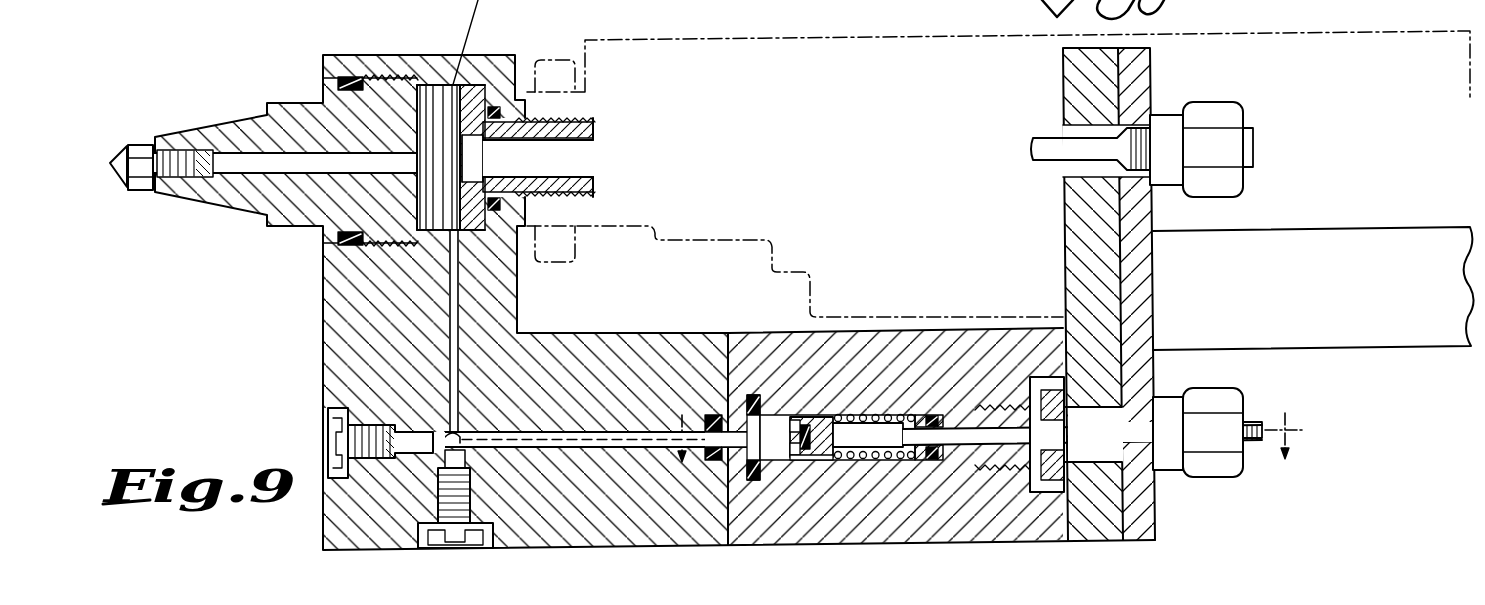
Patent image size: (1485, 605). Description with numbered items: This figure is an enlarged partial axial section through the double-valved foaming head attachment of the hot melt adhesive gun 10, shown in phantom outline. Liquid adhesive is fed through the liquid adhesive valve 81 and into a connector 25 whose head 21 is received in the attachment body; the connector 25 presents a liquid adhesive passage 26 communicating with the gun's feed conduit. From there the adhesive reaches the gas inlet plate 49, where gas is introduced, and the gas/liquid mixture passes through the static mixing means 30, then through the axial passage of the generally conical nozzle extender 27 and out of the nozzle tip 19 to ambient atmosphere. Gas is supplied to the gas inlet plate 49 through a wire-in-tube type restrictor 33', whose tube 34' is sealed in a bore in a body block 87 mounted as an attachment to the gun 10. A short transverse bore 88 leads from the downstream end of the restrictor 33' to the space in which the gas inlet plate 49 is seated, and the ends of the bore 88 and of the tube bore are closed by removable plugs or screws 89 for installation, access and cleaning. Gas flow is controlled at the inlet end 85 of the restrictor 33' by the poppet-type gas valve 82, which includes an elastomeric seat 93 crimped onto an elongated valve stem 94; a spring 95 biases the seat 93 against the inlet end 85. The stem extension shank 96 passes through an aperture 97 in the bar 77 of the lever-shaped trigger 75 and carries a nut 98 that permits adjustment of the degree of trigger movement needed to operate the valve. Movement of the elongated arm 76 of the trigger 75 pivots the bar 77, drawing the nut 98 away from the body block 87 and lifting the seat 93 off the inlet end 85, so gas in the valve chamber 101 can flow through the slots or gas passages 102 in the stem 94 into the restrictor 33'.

The gun 10 is at (839, 38).
The nozzle tip 19 is at (129, 148).
The connector head 21 is at (471, 100).
The connector 25 is at (581, 118).
The liquid adhesive passage 26 is at (579, 162).
The nozzle extender 27 is at (282, 113).
The static mixing means 30 is at (433, 118).
The wire-in-tube type restrictor 33' is at (620, 411).
The tube 34' is at (631, 415).
The gas inlet plate 49 is at (455, 181).
The lever-shaped trigger 75 is at (1365, 251).
The elongated arm 76 is at (1384, 304).
The right angled head or bar 77 is at (1138, 289).
The liquid adhesive valve 81 is at (1261, 118).
The gas valve 82 is at (1258, 401).
The inlet end of restrictor 85 is at (810, 462).
The body block 87 is at (717, 333).
The transverse bore 88 is at (460, 352).
The removable plugs or screws 89 is at (328, 432).
The elastomeric seat 93 is at (800, 414).
The valve stem 94 is at (858, 436).
The spring 95 is at (882, 412).
The stem extension shank 96 is at (975, 432).
The aperture 97 is at (1145, 410).
The nut 98 is at (1215, 472).
The valve chamber 101 is at (848, 463).
The slots or gas passages 102 is at (815, 462).